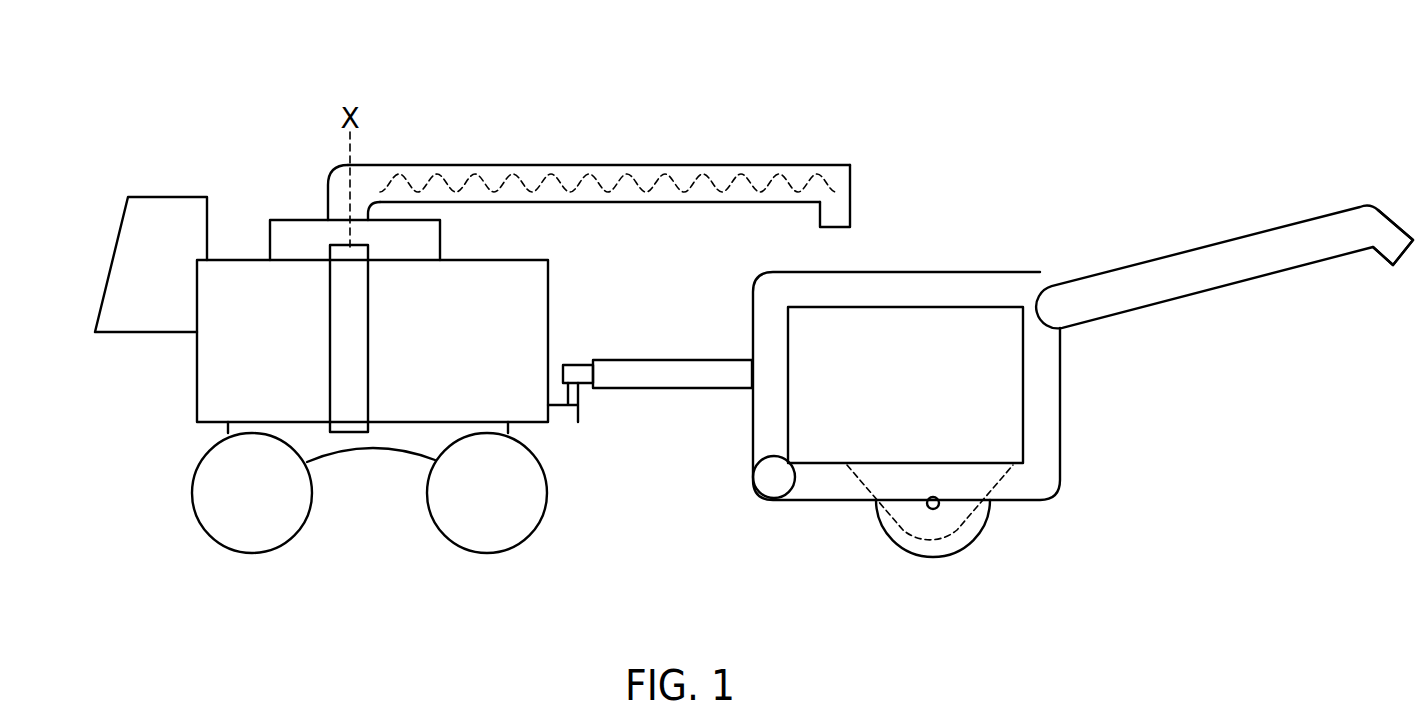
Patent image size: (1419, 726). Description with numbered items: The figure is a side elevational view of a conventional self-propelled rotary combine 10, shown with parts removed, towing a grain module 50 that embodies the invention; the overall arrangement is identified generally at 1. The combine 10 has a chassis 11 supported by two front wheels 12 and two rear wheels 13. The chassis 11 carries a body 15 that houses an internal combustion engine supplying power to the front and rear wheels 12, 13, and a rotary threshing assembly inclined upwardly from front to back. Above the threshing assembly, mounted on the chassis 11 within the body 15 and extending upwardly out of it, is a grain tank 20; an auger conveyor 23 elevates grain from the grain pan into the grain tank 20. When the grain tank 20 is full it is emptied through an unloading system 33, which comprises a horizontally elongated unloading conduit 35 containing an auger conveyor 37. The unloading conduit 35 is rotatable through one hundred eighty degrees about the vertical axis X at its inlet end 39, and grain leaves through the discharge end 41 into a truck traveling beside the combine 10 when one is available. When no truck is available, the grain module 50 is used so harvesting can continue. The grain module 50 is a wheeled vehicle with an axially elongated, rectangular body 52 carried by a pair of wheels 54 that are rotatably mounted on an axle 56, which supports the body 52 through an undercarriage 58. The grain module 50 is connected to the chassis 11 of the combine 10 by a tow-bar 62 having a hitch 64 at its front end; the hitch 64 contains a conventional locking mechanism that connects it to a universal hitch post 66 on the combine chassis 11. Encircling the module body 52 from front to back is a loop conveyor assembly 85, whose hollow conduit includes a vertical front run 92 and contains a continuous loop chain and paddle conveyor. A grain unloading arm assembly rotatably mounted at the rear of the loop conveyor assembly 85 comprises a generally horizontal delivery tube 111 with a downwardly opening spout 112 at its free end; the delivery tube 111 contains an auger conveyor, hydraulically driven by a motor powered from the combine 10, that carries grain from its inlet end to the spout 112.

The material processing system 1 is at (123, 227).
The combine 10 is at (368, 528).
The chassis 11 is at (395, 423).
The front wheels 12 is at (252, 553).
The rear wheels 13 is at (485, 553).
The body 15 is at (197, 366).
The grain tank 20 is at (298, 223).
The auger conveyor 23 is at (368, 347).
The unloading system 33 is at (592, 128).
The unloading conduit 35 is at (632, 165).
The auger conveyor 37 is at (707, 167).
The inlet end 39 is at (328, 202).
The discharge end 41 is at (850, 208).
The grain module 50 is at (897, 411).
The body 52 is at (815, 340).
The wheels 54 is at (997, 525).
The axle 56 is at (930, 507).
The undercarriage 58 is at (1008, 443).
The tow-bar 62 is at (657, 360).
The hitch 64 is at (565, 365).
The universal hitch post 66 is at (581, 390).
The loop conveyor assembly 85 is at (1060, 392).
The vertical front run 92 is at (750, 412).
The delivery tube 111 is at (1300, 222).
The spout 112 is at (1383, 267).